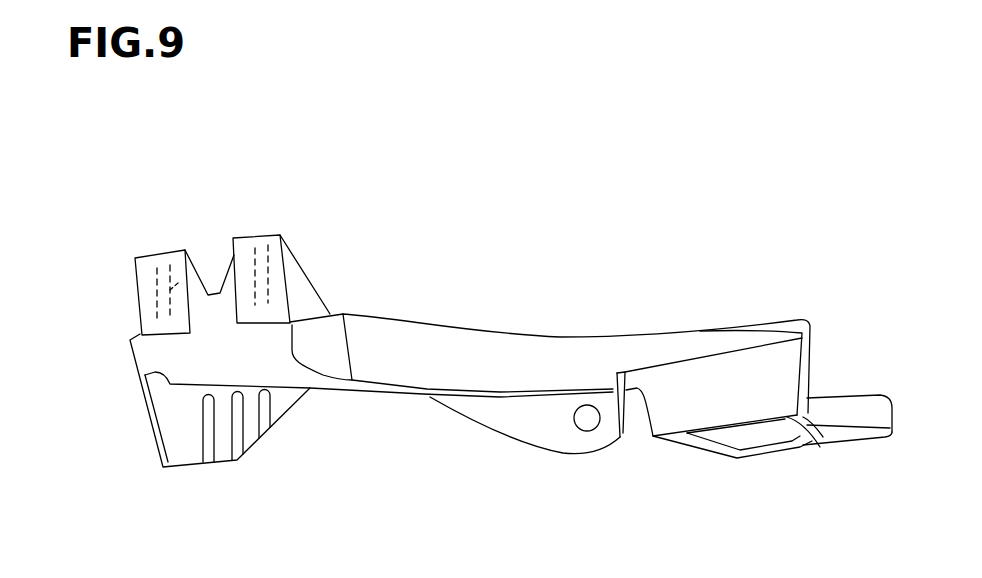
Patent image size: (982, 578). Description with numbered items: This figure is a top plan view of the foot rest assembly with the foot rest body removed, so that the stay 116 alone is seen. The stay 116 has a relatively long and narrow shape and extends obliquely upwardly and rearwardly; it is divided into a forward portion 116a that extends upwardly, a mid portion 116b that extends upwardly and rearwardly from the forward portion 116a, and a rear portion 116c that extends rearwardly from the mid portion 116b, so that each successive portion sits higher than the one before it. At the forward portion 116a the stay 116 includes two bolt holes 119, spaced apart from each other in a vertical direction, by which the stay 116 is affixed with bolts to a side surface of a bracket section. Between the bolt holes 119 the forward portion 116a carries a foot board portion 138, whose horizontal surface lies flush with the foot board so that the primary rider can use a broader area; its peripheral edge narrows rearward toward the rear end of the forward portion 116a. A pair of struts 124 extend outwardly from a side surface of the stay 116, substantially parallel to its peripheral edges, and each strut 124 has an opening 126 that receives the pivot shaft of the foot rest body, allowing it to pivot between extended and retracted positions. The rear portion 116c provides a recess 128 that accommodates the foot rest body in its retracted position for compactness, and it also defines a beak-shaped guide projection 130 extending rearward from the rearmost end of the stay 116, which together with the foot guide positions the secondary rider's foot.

The stay 116 is at (546, 270).
The forward portion 116a is at (143, 360).
The mid portion 116b is at (427, 397).
The rear portion 116c is at (863, 437).
The bolt holes 119 is at (253, 274).
The struts 124 is at (523, 427).
The opening 126 is at (583, 431).
The recess 128 is at (738, 362).
The guide projection 130 is at (862, 407).
The foot board portion 138 is at (198, 433).